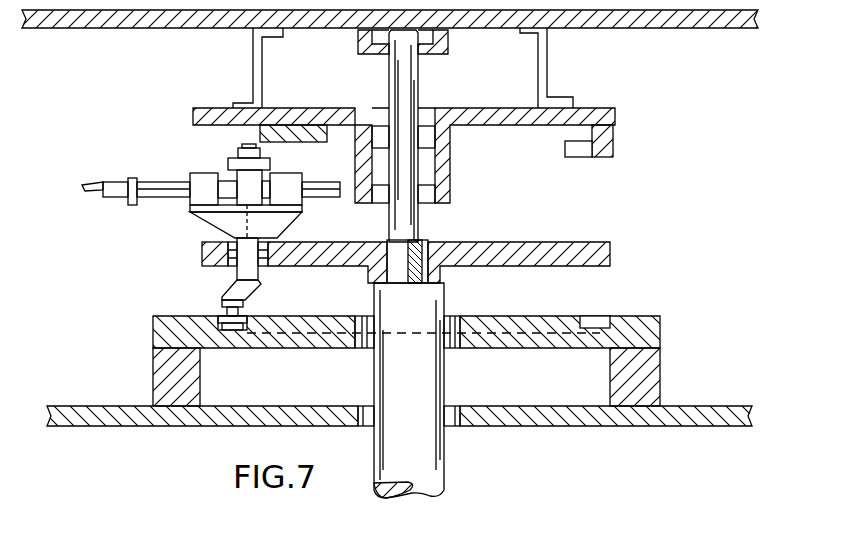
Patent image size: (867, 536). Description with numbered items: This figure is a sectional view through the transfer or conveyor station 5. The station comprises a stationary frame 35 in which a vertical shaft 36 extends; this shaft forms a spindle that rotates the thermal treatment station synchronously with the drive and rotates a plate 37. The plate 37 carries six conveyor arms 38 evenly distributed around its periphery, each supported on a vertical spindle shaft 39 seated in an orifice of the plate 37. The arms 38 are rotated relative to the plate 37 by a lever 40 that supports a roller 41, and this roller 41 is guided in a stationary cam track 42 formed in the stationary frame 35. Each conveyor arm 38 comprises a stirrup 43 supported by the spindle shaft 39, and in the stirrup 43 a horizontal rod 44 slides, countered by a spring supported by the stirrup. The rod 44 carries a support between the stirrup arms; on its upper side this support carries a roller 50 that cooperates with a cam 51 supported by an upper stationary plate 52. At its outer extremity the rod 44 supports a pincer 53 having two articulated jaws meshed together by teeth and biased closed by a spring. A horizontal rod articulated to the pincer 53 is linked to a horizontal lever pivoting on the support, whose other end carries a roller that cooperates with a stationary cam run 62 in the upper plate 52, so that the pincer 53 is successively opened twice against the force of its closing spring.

The transfer or conveyor station 5 is at (622, 98).
The stationary frame 35 is at (328, 342).
The vertical shaft 36 is at (409, 264).
The plate 37 is at (204, 258).
The conveyor arm 38 is at (168, 176).
The vertical spindle shaft 39 is at (275, 238).
The lever 40 is at (258, 288).
The roller 41 is at (191, 316).
The stationary cam track 42 is at (236, 332).
The stirrup 43 is at (222, 216).
The horizontal rod 44 is at (150, 200).
The roller 50 is at (232, 156).
The cam 51 is at (602, 158).
The upper stationary plate 52 is at (586, 108).
The pincer 53 is at (107, 176).
The stationary cam run 62 is at (290, 125).